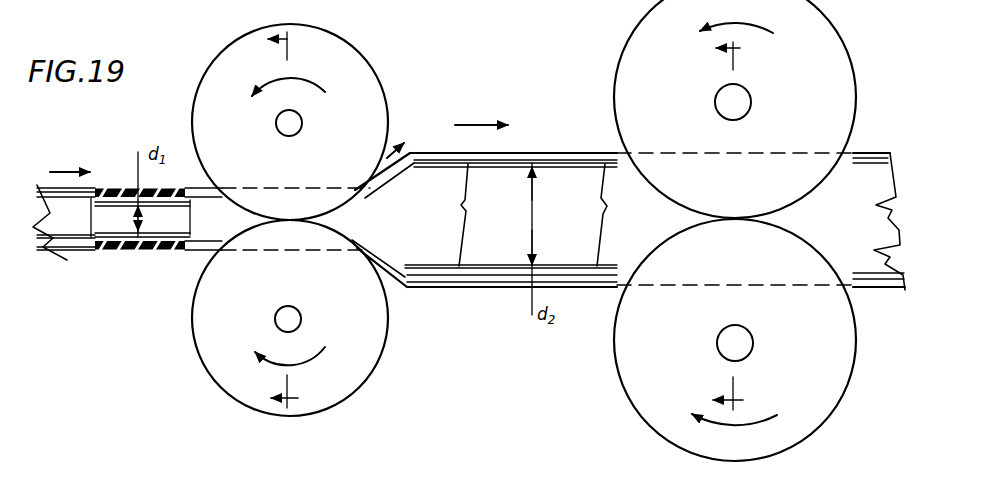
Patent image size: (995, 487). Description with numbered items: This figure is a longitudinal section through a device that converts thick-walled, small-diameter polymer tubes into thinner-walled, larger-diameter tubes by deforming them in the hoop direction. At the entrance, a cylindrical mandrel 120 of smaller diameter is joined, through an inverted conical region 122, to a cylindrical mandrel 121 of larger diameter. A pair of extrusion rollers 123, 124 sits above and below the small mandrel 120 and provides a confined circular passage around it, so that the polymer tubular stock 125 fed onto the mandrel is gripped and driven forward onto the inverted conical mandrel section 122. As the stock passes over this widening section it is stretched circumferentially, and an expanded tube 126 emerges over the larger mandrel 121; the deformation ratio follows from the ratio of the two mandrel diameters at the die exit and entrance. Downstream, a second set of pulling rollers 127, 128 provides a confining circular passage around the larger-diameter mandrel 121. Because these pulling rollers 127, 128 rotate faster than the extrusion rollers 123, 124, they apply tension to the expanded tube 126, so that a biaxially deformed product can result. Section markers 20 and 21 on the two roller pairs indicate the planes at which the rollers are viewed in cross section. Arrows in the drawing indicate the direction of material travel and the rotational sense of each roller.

The cylindrical mandrel 120 is at (111, 218).
The cylindrical mandrel of larger diameter 121 is at (511, 223).
The inverted conical region 122 is at (393, 273).
The extrusion roller 123 is at (360, 83).
The extrusion roller 124 is at (202, 328).
The polymer tubular stock 125 is at (170, 250).
The expanded tube 126 is at (588, 156).
The pulling roller 127 is at (640, 67).
The pulling roller 128 is at (632, 332).
The section line 20 is at (273, 220).
The section line 21 is at (720, 226).